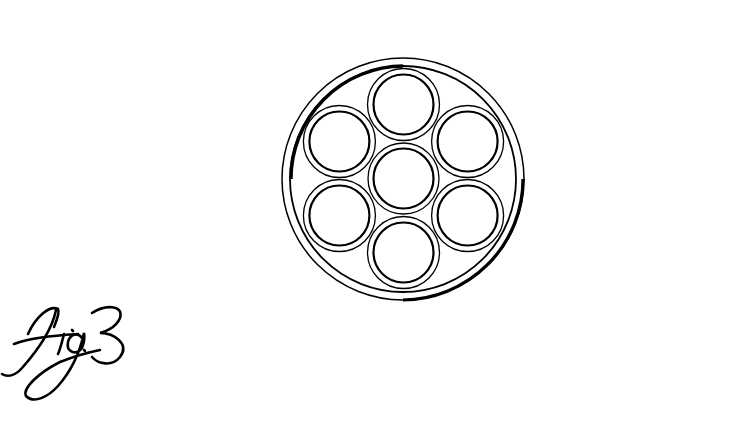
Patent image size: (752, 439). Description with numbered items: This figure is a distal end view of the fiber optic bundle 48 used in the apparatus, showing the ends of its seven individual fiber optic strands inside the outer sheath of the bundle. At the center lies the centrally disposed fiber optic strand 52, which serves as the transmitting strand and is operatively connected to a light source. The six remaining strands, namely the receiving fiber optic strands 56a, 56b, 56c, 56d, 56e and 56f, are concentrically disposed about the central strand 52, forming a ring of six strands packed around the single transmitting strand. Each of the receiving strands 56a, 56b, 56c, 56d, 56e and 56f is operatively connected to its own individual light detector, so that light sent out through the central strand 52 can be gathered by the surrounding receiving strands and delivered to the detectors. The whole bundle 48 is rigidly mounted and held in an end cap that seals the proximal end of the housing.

The fiber optic bundle 48 is at (513, 162).
The centrally disposed fiber optic strand 52 is at (447, 248).
The receiving fiber optic strand 56a is at (404, 68).
The receiving fiber optic strand 56b is at (494, 125).
The receiving fiber optic strand 56c is at (497, 221).
The receiving fiber optic strand 56d is at (422, 289).
The receiving fiber optic strand 56e is at (316, 232).
The receiving fiber optic strand 56f is at (313, 121).